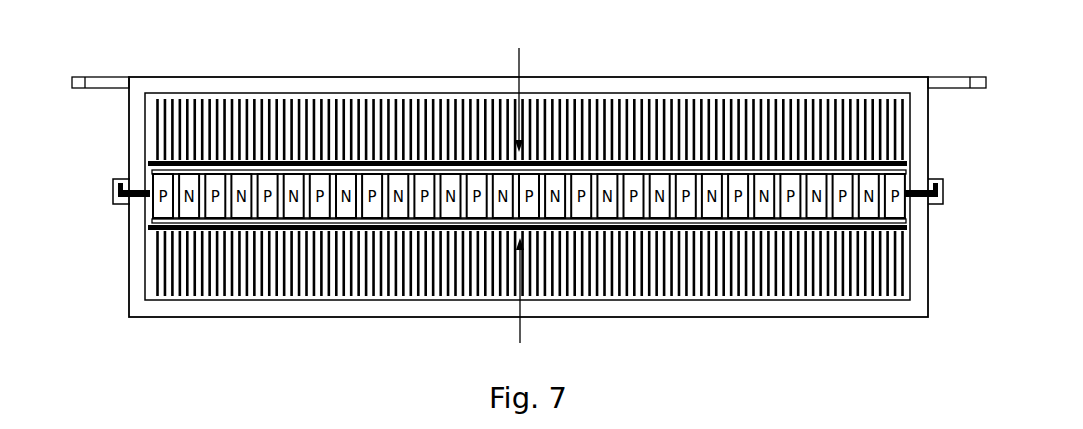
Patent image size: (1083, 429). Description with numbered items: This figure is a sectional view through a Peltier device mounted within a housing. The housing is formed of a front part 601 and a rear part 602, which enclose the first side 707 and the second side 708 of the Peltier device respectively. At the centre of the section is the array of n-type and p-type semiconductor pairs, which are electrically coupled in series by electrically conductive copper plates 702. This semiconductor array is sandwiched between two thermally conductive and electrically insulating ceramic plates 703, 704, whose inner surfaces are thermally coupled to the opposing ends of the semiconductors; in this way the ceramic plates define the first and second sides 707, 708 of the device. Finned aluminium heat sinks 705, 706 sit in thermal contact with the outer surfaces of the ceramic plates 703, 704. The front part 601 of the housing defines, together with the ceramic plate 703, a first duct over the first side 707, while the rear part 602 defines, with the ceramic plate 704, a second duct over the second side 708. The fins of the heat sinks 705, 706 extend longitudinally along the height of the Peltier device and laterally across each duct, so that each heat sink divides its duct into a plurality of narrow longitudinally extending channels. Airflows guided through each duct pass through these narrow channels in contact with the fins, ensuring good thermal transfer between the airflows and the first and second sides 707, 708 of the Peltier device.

The front part of the housing 601 is at (170, 308).
The rear part of the housing 602 is at (157, 85).
The electrically conductive copper plates 702 is at (153, 173).
The ceramic plate 703 is at (898, 222).
The ceramic plate 704 is at (898, 168).
The finned aluminium heat sink 705 is at (893, 230).
The finned aluminium heat sink 706 is at (893, 162).
The first side of the Peltier device 707 is at (521, 302).
The second side of the Peltier device 708 is at (520, 90).